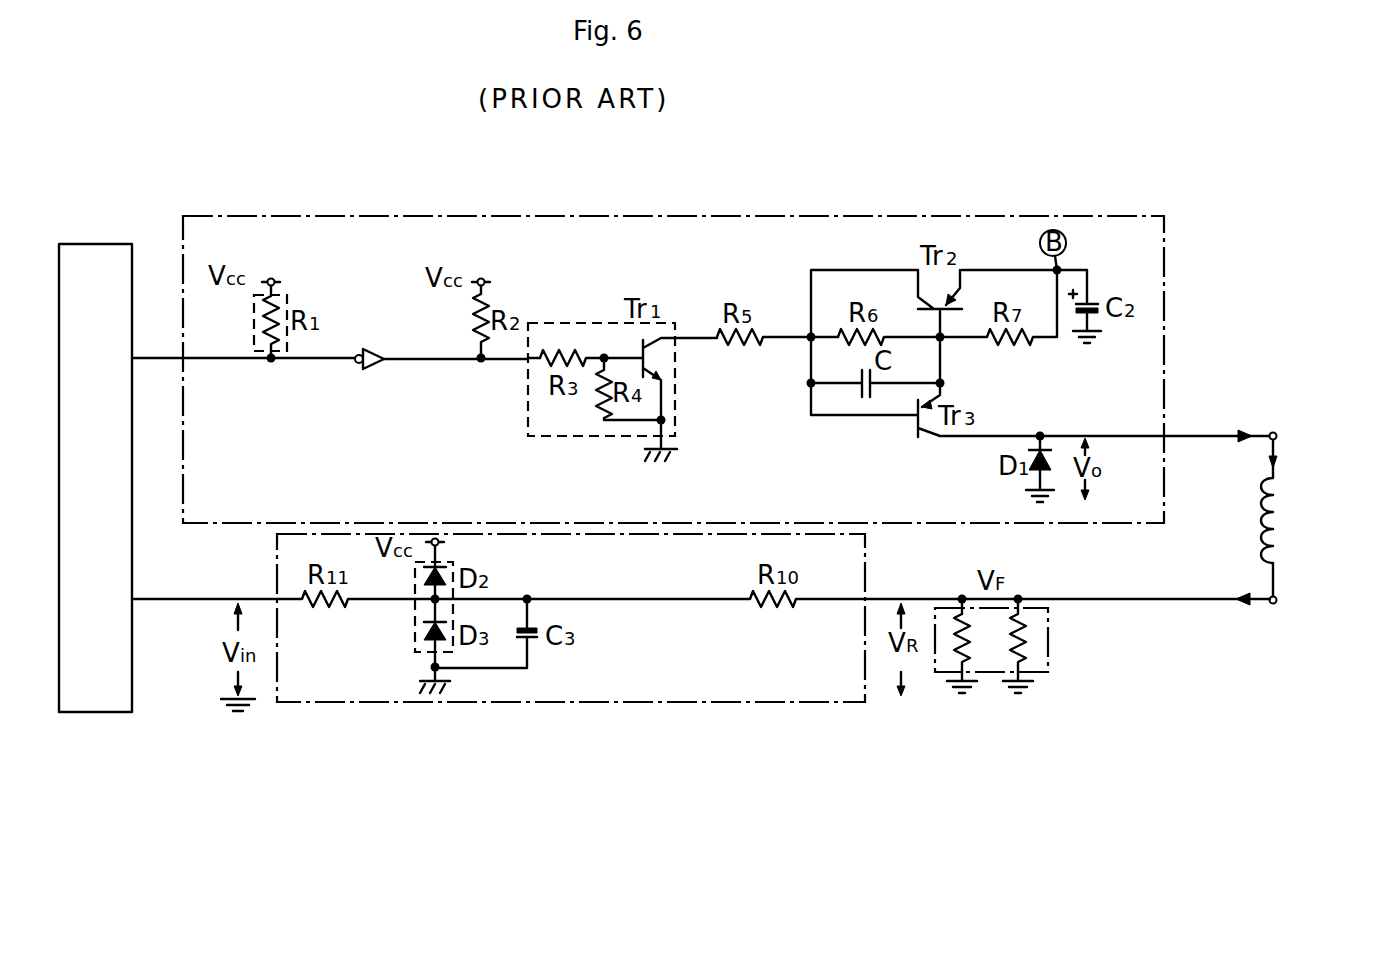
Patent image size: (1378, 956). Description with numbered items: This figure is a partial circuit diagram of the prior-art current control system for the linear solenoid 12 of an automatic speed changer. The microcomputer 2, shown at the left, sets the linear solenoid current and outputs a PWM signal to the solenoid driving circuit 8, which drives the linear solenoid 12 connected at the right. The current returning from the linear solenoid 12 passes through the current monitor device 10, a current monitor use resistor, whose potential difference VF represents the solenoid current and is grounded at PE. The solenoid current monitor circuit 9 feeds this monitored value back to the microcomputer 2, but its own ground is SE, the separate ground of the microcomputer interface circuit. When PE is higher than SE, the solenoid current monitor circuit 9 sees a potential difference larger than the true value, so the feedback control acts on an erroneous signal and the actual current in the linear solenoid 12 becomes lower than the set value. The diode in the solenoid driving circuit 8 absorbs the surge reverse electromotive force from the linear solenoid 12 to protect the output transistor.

The microcomputer 2 is at (106, 246).
The solenoid driving circuit 8 is at (1132, 220).
The solenoid current monitor circuit 9 is at (852, 578).
The current monitor device 10 is at (1045, 630).
The linear solenoid 12 is at (1292, 521).